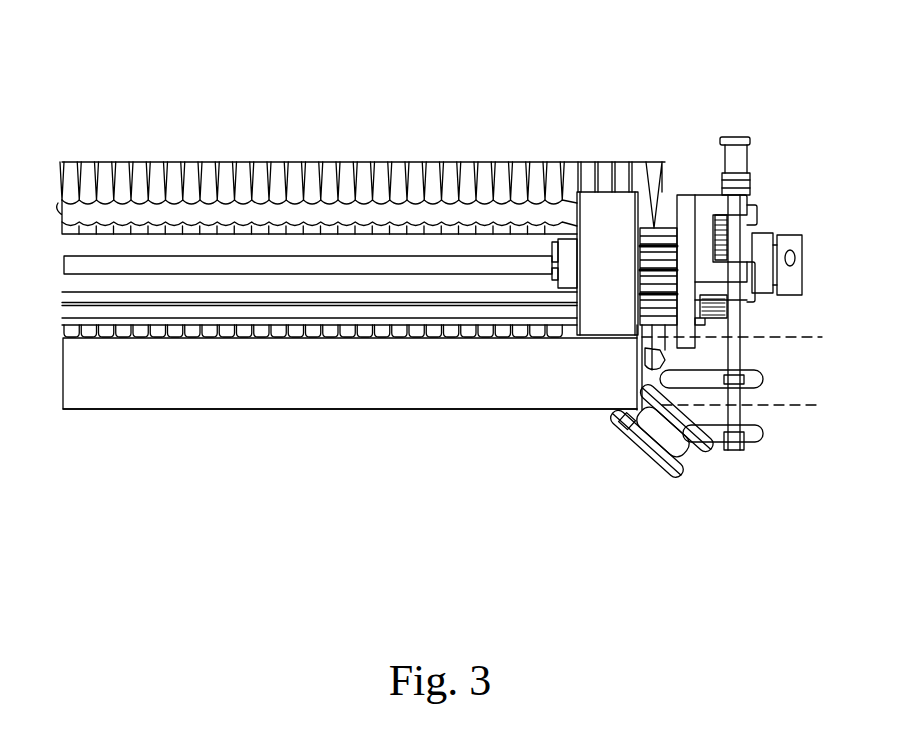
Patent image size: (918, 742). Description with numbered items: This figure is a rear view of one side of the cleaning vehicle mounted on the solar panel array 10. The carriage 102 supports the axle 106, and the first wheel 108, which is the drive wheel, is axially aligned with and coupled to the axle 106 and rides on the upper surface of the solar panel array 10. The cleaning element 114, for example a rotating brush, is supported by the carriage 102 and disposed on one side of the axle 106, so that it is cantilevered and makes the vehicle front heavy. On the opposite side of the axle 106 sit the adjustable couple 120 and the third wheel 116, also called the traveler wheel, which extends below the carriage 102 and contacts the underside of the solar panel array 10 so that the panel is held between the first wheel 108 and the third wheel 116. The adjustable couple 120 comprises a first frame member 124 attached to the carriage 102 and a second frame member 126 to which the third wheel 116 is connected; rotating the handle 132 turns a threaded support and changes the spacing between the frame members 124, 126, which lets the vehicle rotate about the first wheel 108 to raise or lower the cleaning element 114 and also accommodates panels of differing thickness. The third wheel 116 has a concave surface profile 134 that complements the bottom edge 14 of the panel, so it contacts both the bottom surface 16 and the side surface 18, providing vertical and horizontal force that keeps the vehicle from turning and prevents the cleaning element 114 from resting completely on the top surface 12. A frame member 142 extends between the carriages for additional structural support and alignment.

The solar panel array 10 is at (350, 373).
The top surface 12 is at (96, 342).
The bottom edge 14 is at (628, 437).
The bottom surface 16 is at (148, 415).
The side surface 18 is at (637, 367).
The carriage 102 is at (682, 192).
The axle 106 is at (228, 260).
The first wheel 108 is at (597, 338).
The cleaning element 114 is at (430, 162).
The third wheel 116 is at (678, 473).
The adjustable couple 120 is at (766, 171).
The first frame member 124 is at (710, 190).
The second frame member 126 is at (753, 443).
The handle 132 is at (742, 137).
The concave surface profile 134 is at (702, 478).
The frame member 142 is at (130, 240).